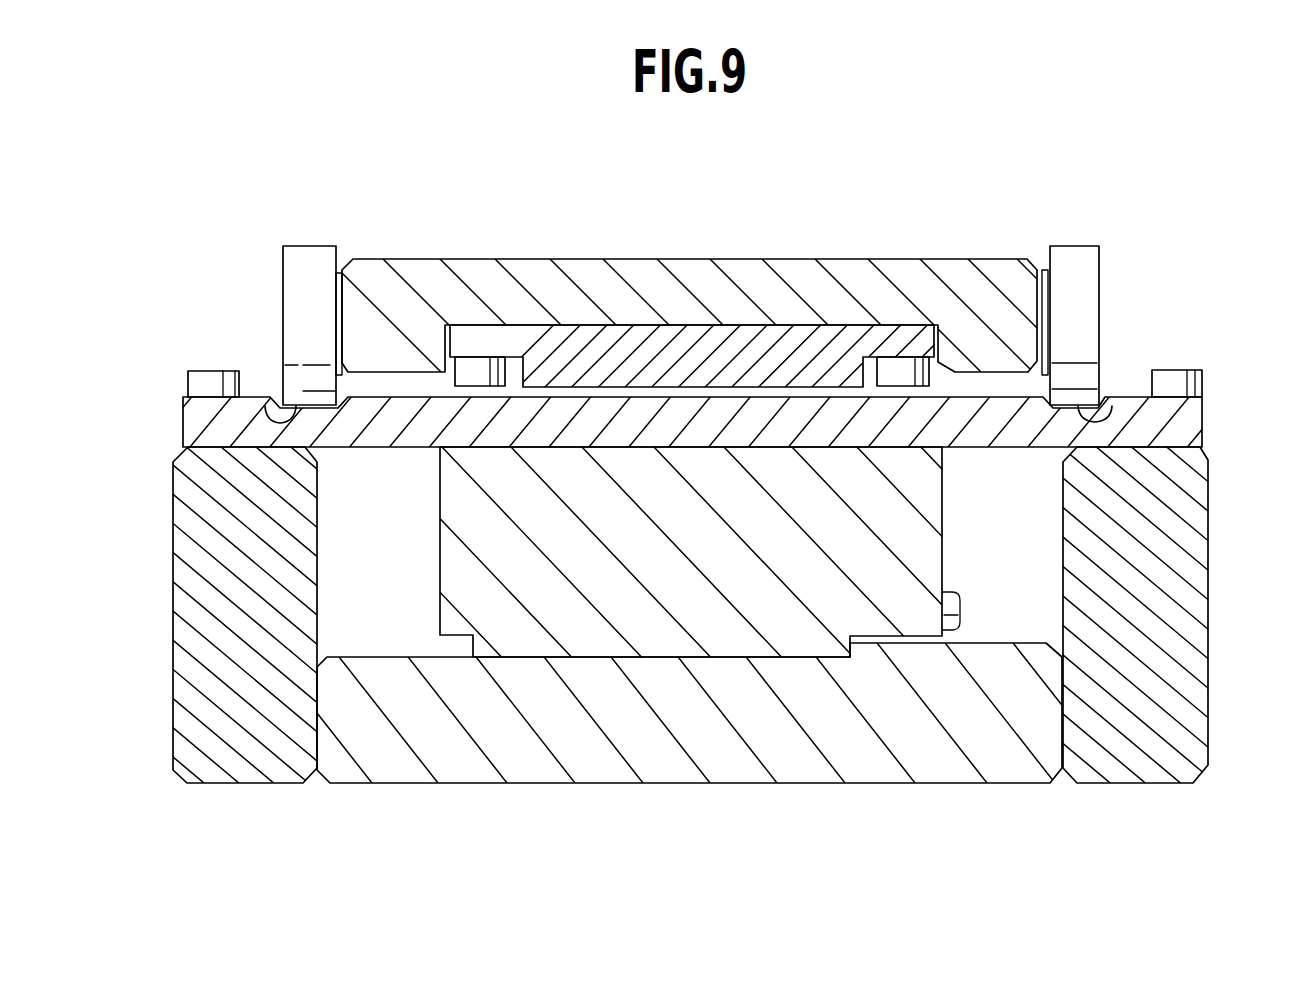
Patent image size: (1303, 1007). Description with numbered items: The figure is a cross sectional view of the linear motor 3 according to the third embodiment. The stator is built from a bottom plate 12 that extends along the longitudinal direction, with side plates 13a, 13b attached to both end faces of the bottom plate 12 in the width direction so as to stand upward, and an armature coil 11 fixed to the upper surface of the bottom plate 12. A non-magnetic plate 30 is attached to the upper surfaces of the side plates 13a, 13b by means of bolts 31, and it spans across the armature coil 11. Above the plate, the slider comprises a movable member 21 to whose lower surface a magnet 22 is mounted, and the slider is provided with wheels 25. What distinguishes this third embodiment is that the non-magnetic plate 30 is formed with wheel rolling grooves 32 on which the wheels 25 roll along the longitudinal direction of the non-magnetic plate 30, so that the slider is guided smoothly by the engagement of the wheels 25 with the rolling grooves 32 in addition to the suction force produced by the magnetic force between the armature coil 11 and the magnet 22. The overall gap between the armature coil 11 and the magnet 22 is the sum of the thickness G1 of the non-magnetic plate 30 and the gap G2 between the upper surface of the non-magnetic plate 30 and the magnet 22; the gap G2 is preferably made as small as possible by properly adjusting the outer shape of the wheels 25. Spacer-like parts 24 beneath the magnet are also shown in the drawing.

The linear motor 3 is at (1184, 168).
The armature coil 11 is at (790, 632).
The bottom plate 12 is at (977, 755).
The side plate 13a is at (1175, 647).
The side plate 13b is at (200, 676).
The movable member 21 is at (997, 290).
The magnet 22 is at (882, 330).
The spacer 24 is at (480, 368).
The wheels 25 is at (1083, 285).
The non-magnetic plate 30 is at (1188, 431).
The bolts 31 is at (1190, 374).
The wheel rolling grooves 32 is at (268, 406).
The thickness of the non-magnetic plate G1 is at (383, 328).
The gap between the upper surface of the non-magnetic plate and the magnet G2 is at (543, 433).